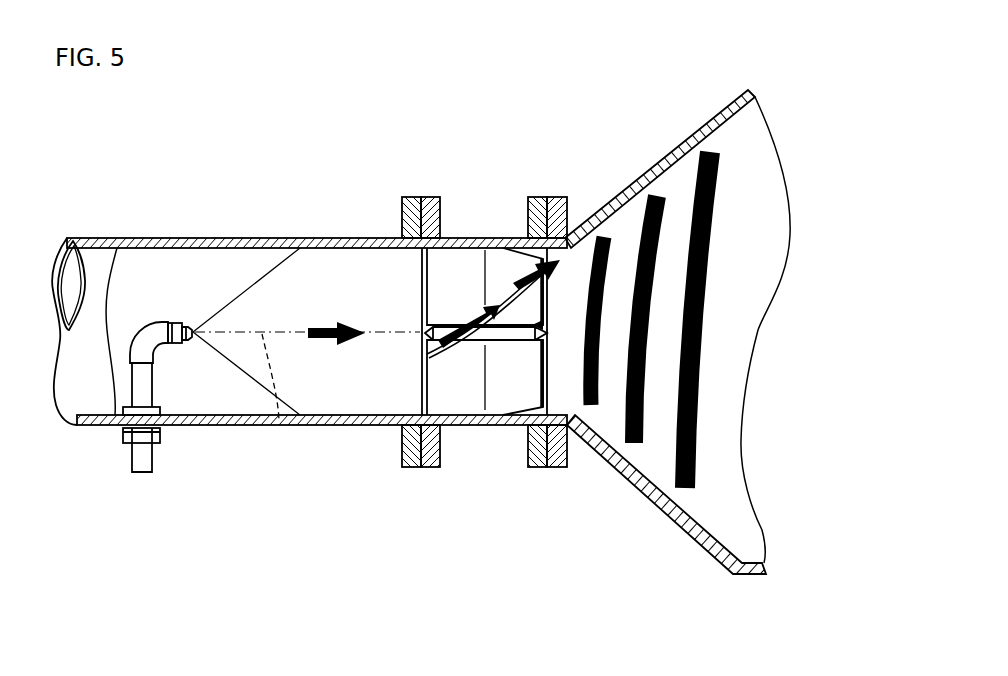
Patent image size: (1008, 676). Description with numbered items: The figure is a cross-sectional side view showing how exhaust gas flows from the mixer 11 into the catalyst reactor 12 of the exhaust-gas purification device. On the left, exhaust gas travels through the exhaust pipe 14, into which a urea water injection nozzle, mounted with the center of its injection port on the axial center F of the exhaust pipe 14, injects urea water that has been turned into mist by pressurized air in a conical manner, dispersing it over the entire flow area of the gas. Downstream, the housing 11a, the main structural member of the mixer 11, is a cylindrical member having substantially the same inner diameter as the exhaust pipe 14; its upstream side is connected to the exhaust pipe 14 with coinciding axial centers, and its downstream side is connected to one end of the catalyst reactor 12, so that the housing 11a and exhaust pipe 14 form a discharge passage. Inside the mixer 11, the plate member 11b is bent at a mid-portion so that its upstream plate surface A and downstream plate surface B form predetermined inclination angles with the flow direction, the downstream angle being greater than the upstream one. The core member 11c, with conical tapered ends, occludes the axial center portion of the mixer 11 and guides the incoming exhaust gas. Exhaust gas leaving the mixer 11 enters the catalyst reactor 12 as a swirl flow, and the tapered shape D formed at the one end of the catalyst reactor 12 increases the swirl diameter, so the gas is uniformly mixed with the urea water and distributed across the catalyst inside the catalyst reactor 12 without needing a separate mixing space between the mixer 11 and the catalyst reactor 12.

The mixer 11 is at (480, 160).
The housing 11a is at (482, 246).
The plate member 11b is at (473, 410).
The core member 11c is at (420, 343).
The catalyst reactor 12 is at (680, 99).
The exhaust pipe 14 is at (246, 162).
The plate surface A is at (465, 398).
The plate surface B is at (514, 398).
The tapered shape D is at (622, 198).
The axial center F is at (279, 421).